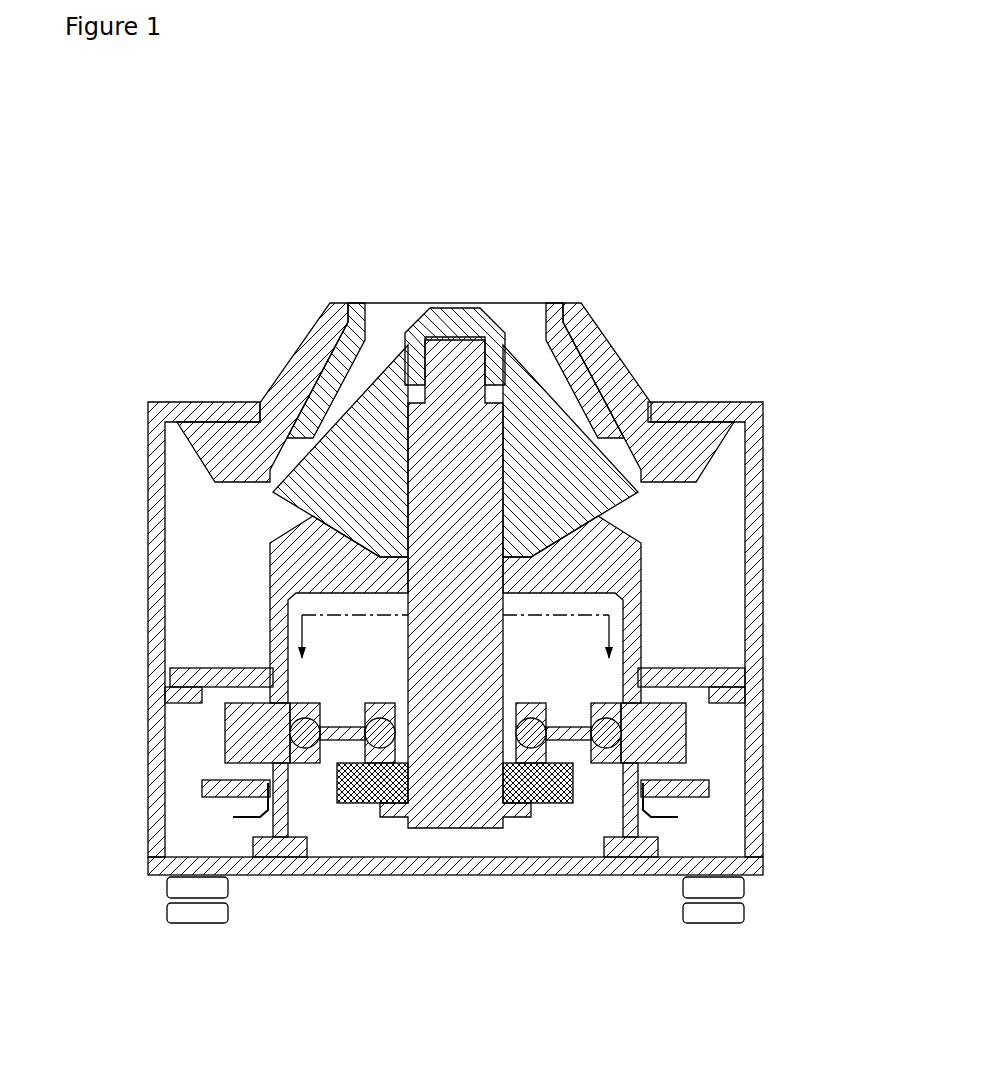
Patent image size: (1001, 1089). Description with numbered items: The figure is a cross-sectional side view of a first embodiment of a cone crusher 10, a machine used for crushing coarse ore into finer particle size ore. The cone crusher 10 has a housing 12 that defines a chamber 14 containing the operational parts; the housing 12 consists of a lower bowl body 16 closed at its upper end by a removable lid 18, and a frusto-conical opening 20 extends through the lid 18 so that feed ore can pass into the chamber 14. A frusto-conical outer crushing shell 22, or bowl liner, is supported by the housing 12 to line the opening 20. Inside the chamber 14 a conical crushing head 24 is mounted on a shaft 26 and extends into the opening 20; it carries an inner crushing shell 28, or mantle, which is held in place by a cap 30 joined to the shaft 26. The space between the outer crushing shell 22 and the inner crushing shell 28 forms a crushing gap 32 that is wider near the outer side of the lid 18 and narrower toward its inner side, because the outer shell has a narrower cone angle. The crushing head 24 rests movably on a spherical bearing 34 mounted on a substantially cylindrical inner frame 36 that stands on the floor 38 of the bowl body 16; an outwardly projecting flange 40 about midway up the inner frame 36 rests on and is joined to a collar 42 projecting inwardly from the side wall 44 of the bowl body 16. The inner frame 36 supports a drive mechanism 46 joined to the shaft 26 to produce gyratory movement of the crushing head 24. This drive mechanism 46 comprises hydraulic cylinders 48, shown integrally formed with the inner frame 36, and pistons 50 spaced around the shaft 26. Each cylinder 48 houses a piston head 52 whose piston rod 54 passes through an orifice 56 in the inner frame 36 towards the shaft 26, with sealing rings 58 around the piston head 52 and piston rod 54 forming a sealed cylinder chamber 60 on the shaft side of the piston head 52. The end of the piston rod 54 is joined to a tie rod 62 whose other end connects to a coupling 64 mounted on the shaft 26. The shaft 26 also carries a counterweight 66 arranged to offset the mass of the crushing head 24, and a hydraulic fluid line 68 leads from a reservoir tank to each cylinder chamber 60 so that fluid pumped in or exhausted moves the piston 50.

The cone crusher 10 is at (142, 186).
The housing 12 is at (763, 460).
The chamber 14 is at (700, 545).
The lower bowl body 16 is at (757, 612).
The removable lid 18 is at (640, 368).
The frusto-conical opening 20 is at (512, 296).
The outer crushing shell 22 is at (565, 347).
The crushing head 24 is at (313, 518).
The shaft 26 is at (452, 405).
The inner crushing shell 28 is at (335, 440).
The cap 30 is at (440, 313).
The crushing gap 32 is at (352, 388).
The spherical bearing 34 is at (310, 537).
The inner frame 36 is at (640, 840).
The floor 38 is at (652, 872).
The outwardly projecting flange 40 is at (740, 672).
The collar 42 is at (740, 718).
The side wall 44 is at (753, 785).
The drive mechanism 46 is at (309, 806).
The hydraulic cylinders 48 is at (255, 777).
The pistons 50 is at (212, 743).
The piston head 52 is at (230, 732).
The piston rod 54 is at (265, 703).
The orifice 56 is at (333, 742).
The sealing rings 58 is at (278, 752).
The cylinder chamber 60 is at (293, 769).
The tie rod 62 is at (342, 783).
The coupling 64 is at (398, 745).
The counterweight 66 is at (547, 783).
The hydraulic fluid line 68 is at (260, 818).